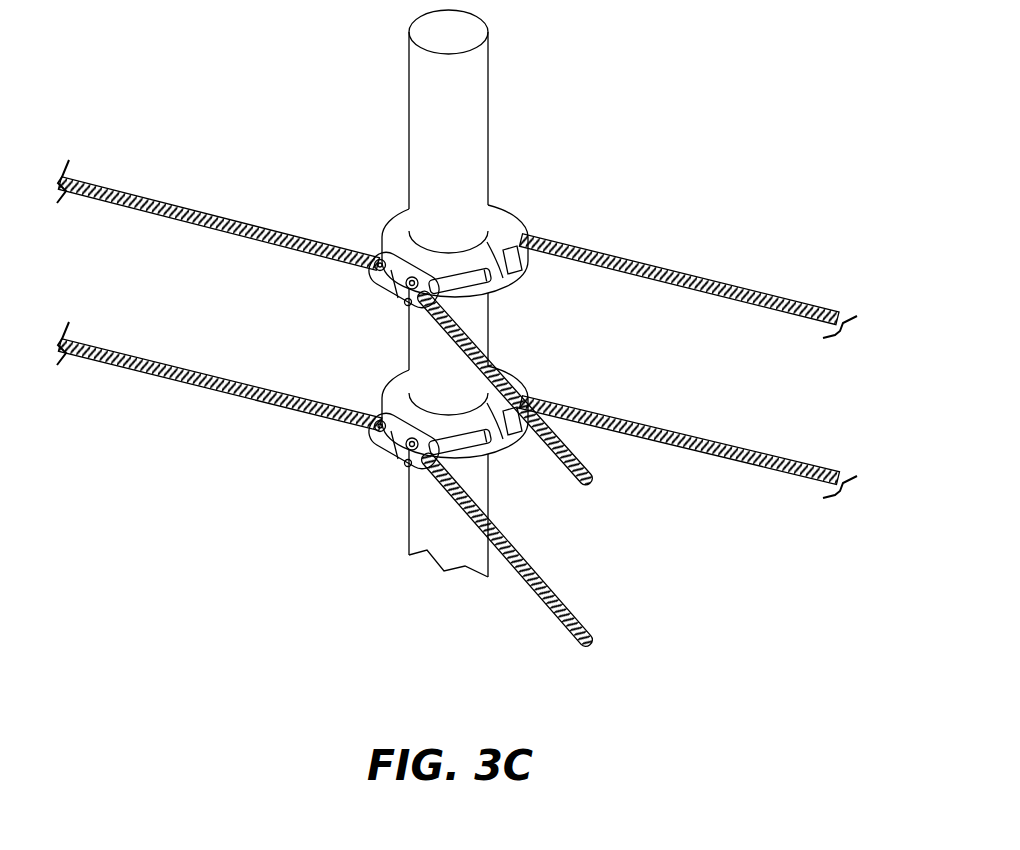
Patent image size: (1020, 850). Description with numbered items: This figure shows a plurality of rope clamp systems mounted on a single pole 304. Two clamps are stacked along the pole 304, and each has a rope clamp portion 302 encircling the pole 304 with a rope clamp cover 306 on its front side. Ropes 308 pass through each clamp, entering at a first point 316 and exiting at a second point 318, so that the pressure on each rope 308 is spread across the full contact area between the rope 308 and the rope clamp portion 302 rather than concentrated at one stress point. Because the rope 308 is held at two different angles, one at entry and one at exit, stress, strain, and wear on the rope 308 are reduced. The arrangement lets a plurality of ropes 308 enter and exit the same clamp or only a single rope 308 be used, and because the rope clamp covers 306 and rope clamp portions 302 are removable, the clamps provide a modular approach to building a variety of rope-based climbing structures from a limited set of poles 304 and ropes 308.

The rope clamp portion 302 is at (480, 308).
The pole 304 is at (458, 557).
The rope clamp cover 306 is at (378, 284).
The rope 308 is at (258, 222).
The first point 316 is at (372, 262).
The second point 318 is at (428, 300).